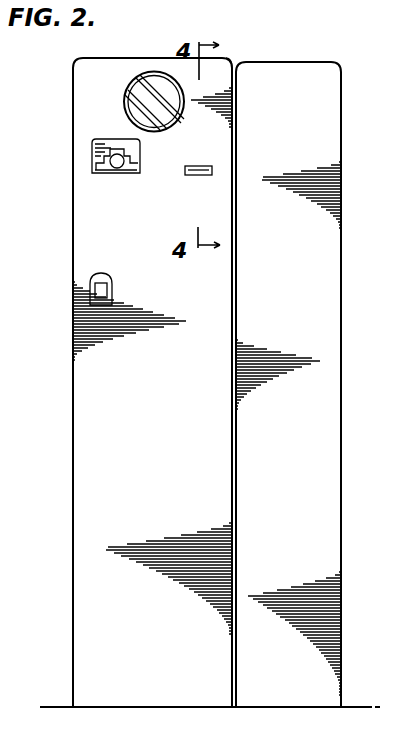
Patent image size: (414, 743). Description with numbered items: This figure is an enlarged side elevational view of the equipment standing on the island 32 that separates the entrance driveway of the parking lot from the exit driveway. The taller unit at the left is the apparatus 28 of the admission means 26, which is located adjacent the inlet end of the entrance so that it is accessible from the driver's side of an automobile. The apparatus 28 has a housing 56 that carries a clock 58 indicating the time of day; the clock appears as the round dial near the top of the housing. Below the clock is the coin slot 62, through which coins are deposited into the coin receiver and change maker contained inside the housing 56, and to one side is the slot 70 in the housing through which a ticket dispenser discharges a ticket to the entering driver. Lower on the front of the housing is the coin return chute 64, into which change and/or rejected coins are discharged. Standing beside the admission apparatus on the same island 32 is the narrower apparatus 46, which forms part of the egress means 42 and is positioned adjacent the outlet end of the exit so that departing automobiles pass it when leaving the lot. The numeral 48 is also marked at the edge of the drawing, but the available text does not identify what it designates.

The means for admission 26 is at (238, 59).
The apparatus 28 is at (128, 56).
The island 32 is at (58, 707).
The means for egress 42 is at (345, 147).
The apparatus 46 is at (319, 72).
The door edge 48 is at (377, 77).
The housing 56 is at (76, 382).
The clock 58 is at (130, 100).
The coin slot 62 is at (117, 168).
The coin return chute 64 is at (112, 295).
The slot 70 is at (187, 178).